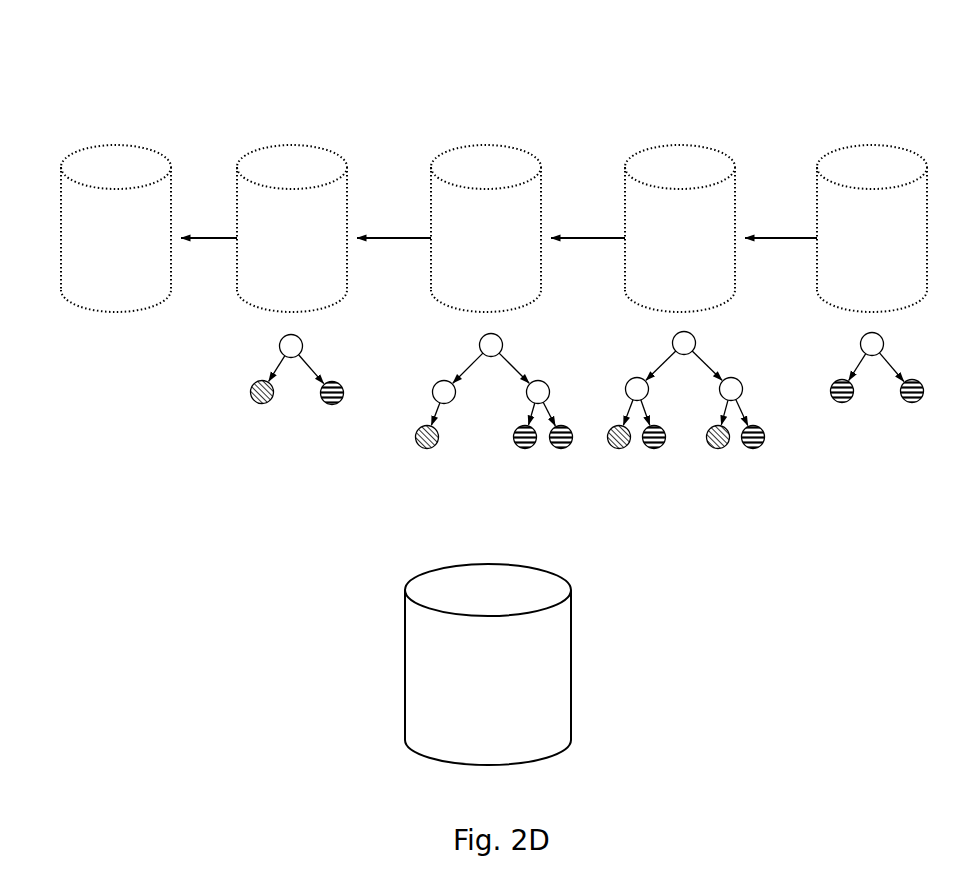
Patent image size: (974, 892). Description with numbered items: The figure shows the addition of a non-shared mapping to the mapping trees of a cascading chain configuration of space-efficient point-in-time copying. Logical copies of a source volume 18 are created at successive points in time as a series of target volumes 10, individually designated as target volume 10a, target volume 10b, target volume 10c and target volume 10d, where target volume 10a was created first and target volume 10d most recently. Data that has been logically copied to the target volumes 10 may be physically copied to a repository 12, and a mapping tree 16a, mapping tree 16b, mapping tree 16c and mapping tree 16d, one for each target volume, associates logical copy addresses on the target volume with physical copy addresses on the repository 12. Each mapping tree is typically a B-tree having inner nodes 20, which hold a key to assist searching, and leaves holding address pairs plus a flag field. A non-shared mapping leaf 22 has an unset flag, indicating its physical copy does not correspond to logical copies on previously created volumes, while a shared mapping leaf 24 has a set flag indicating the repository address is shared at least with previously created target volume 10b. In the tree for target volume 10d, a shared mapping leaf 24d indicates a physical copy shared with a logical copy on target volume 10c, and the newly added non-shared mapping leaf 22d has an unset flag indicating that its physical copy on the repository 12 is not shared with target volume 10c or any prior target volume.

The target volumes 10 is at (554, 181).
The target volume 10a is at (872, 228).
The target volume 10b is at (680, 228).
The target volume 10c is at (486, 228).
The target volume 10d is at (292, 228).
The repository 12 is at (571, 618).
The mapping tree 16a is at (892, 338).
The mapping tree 16b is at (673, 414).
The mapping tree 16c is at (438, 353).
The mapping tree 16d is at (289, 396).
The source volume 18 is at (132, 150).
The inner nodes 20 is at (696, 341).
The non-shared mapping leaf 22 is at (765, 437).
The non-shared mapping leaf 22d is at (337, 403).
The shared mapping leaf 24 is at (708, 442).
The shared mapping leaf 24d is at (254, 399).